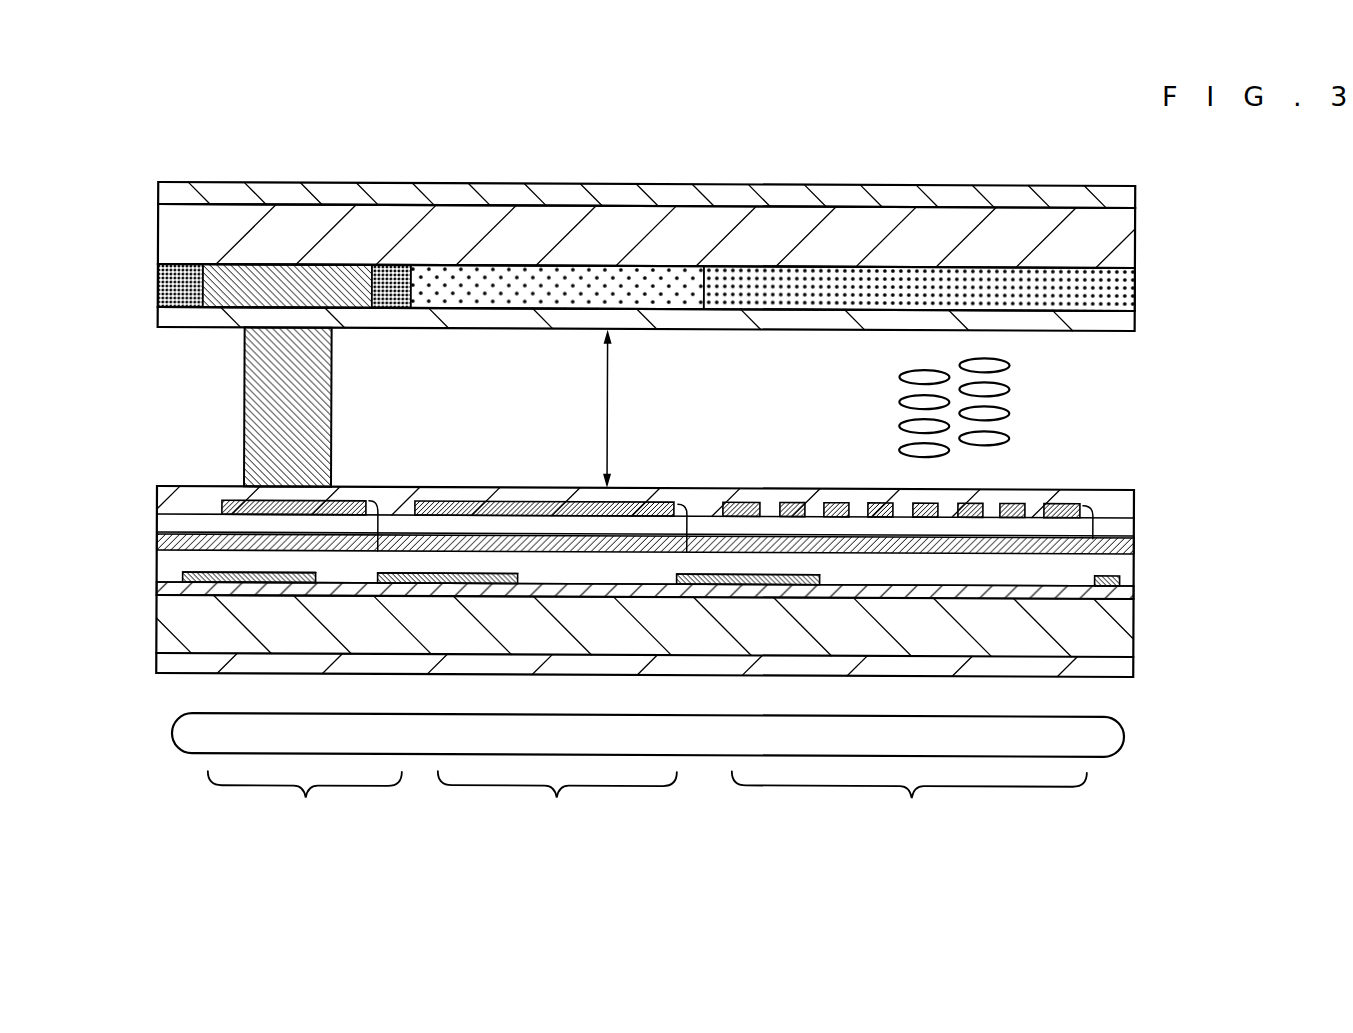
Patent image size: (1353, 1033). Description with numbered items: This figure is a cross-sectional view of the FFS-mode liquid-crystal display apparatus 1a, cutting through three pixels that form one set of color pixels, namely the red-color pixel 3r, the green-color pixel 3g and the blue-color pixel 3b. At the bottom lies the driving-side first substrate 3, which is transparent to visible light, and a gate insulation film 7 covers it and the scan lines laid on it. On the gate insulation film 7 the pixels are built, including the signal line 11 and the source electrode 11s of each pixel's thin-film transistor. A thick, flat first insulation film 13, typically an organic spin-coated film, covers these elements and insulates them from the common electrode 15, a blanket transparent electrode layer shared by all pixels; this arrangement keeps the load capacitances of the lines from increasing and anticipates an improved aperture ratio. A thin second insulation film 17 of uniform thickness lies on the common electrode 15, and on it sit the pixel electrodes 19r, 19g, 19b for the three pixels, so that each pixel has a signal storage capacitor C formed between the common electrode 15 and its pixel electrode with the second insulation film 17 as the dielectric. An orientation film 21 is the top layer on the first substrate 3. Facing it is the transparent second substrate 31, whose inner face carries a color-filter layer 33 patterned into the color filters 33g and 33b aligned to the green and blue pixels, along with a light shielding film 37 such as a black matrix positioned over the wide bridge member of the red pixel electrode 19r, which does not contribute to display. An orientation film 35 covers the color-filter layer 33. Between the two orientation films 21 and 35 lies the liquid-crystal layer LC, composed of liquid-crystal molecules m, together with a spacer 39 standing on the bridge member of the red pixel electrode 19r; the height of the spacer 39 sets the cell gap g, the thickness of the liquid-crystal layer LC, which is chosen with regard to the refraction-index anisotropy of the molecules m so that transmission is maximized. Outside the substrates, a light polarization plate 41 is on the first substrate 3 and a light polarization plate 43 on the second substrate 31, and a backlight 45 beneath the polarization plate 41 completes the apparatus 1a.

The liquid-crystal display apparatus 1a is at (160, 142).
The light shielding film 37 is at (293, 264).
The color filter 33g is at (500, 264).
The color filter 33b is at (840, 264).
The light polarization plate 43 is at (1010, 182).
The second substrate 31 is at (1098, 204).
The color-filter layer 33 is at (688, 213).
The orientation film 35 is at (1134, 316).
The spacer 39 is at (331, 380).
The liquid-crystal molecules m is at (898, 375).
The liquid-crystal layer LC is at (1023, 408).
The cell gap g is at (618, 409).
The orientation film 21 is at (182, 486).
The pixel electrode 19r is at (233, 498).
The pixel electrode 19g is at (553, 500).
The pixel electrode 19b is at (1062, 500).
The signal storage capacitor C is at (397, 498).
The second insulation film 17 is at (1134, 514).
The common electrode 15 is at (1134, 545).
The first insulation film 13 is at (1134, 571).
The gate insulation film 7 is at (1134, 596).
The first substrate 3 is at (1134, 631).
The light polarization plate 41 is at (1134, 664).
The backlight 45 is at (1125, 731).
The signal line 11 is at (198, 590).
The source electrode 11s is at (285, 588).
The red-color pixel 3r is at (305, 801).
The green-color pixel 3g is at (557, 801).
The blue-color pixel 3b is at (909, 802).